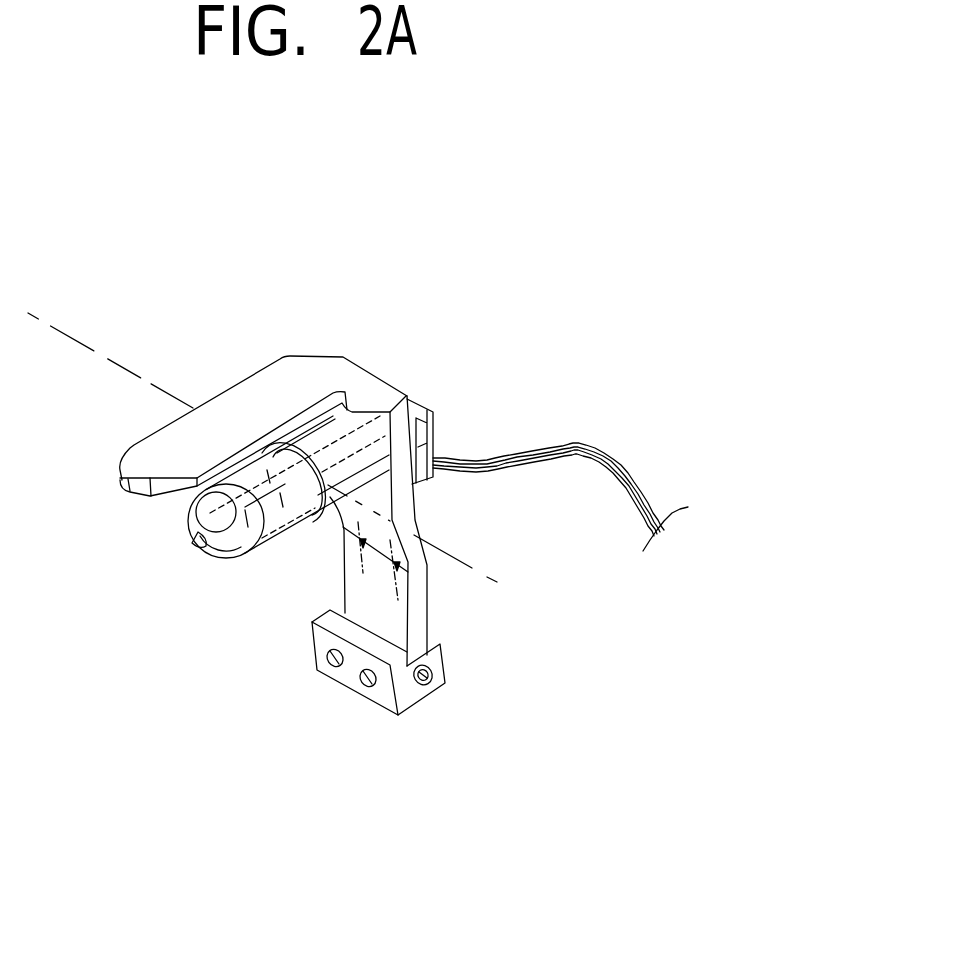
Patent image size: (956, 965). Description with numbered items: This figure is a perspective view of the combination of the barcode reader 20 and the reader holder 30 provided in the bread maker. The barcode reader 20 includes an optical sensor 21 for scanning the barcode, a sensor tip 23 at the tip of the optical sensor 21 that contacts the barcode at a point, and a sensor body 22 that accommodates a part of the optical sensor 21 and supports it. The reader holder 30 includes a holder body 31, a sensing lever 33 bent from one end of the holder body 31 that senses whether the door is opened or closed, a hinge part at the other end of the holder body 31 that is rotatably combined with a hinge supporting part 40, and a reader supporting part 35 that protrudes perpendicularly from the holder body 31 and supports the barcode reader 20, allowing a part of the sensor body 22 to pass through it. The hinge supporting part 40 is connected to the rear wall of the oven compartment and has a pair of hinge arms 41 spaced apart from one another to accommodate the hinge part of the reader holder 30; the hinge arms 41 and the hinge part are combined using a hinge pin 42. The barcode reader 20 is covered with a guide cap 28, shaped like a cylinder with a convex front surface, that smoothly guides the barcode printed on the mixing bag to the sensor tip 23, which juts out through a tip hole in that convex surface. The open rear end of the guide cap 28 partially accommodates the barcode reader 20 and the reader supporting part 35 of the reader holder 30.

The barcode reader 20 is at (248, 655).
The optical sensor 21 is at (220, 550).
The sensor body 22 is at (268, 543).
The sensor tip 23 is at (197, 542).
The guide cap 28 is at (197, 505).
The reader holder 30 is at (253, 369).
The holder body 31 is at (418, 519).
The sensing lever 33 is at (137, 463).
The reader supporting part 35 is at (347, 497).
The hinge supporting part 40 is at (380, 698).
The hinge arms 41 is at (437, 667).
The hinge pin 42 is at (433, 687).